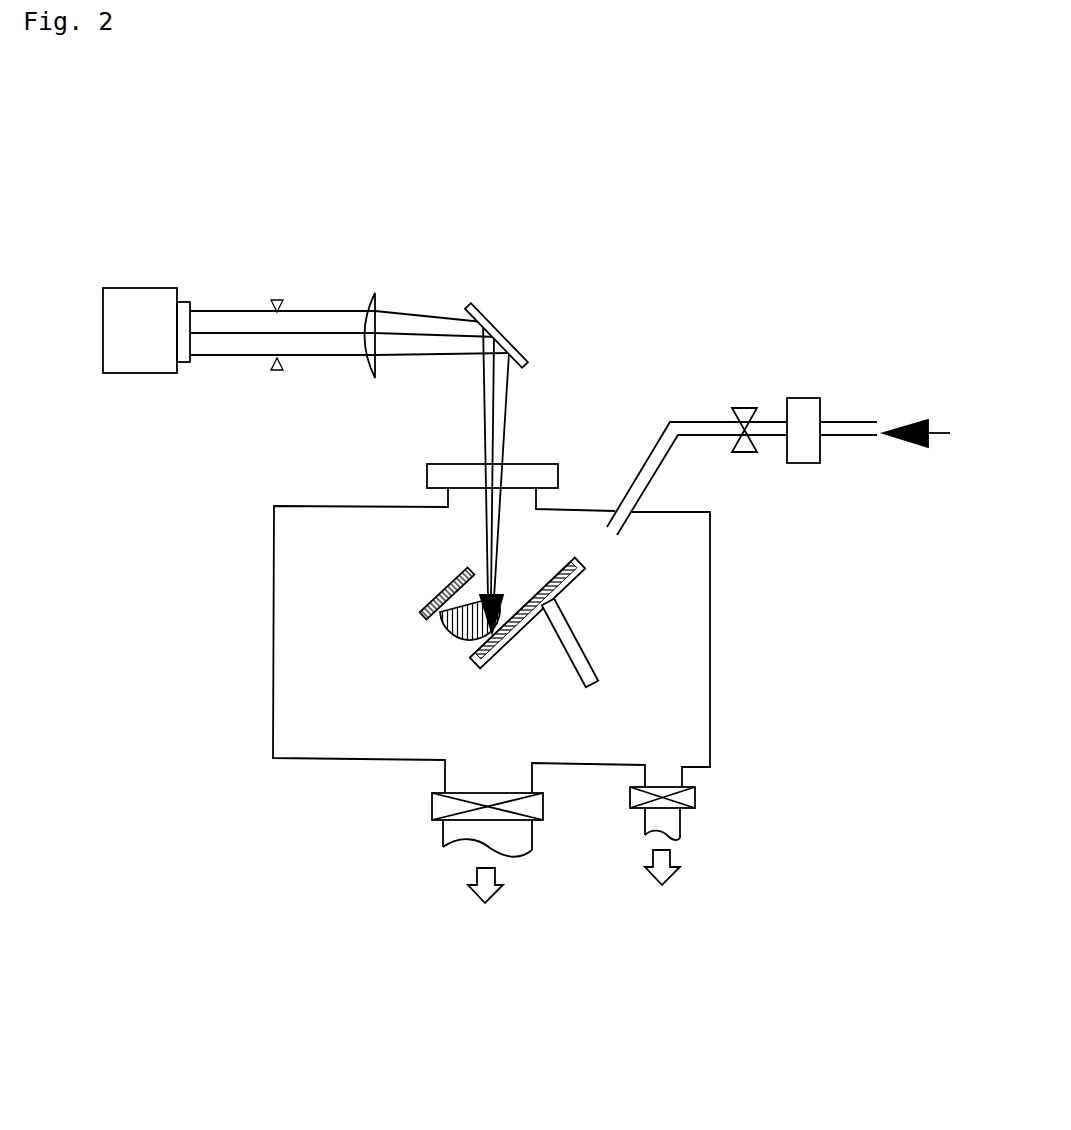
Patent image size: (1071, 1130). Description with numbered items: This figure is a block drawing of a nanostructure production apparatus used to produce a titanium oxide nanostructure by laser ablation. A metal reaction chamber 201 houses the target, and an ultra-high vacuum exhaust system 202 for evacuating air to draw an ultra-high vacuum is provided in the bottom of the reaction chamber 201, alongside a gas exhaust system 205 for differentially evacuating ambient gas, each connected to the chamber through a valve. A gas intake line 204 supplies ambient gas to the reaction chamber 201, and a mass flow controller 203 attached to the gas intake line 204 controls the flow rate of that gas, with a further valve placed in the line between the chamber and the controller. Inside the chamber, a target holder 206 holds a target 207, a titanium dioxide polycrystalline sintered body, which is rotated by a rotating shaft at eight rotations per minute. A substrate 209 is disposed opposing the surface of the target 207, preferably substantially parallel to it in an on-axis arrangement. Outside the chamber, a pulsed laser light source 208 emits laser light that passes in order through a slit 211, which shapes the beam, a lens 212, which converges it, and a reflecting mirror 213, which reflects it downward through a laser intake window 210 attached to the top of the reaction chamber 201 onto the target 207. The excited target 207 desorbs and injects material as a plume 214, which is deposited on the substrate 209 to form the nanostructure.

The reaction chamber 201 is at (288, 518).
The ultra-high vacuum exhaust system 202 is at (480, 890).
The mass flow controller 203 is at (805, 418).
The gas intake line 204 is at (695, 430).
The gas exhaust system 205 is at (663, 872).
The target holder 206 is at (590, 568).
The target 207 is at (572, 598).
The pulsed laser light source 208 is at (147, 362).
The substrate 209 is at (423, 614).
The laser intake window 210 is at (543, 476).
The slit 211 is at (276, 300).
The lens 212 is at (373, 297).
The reflecting mirror 213 is at (500, 318).
The plume 214 is at (457, 630).